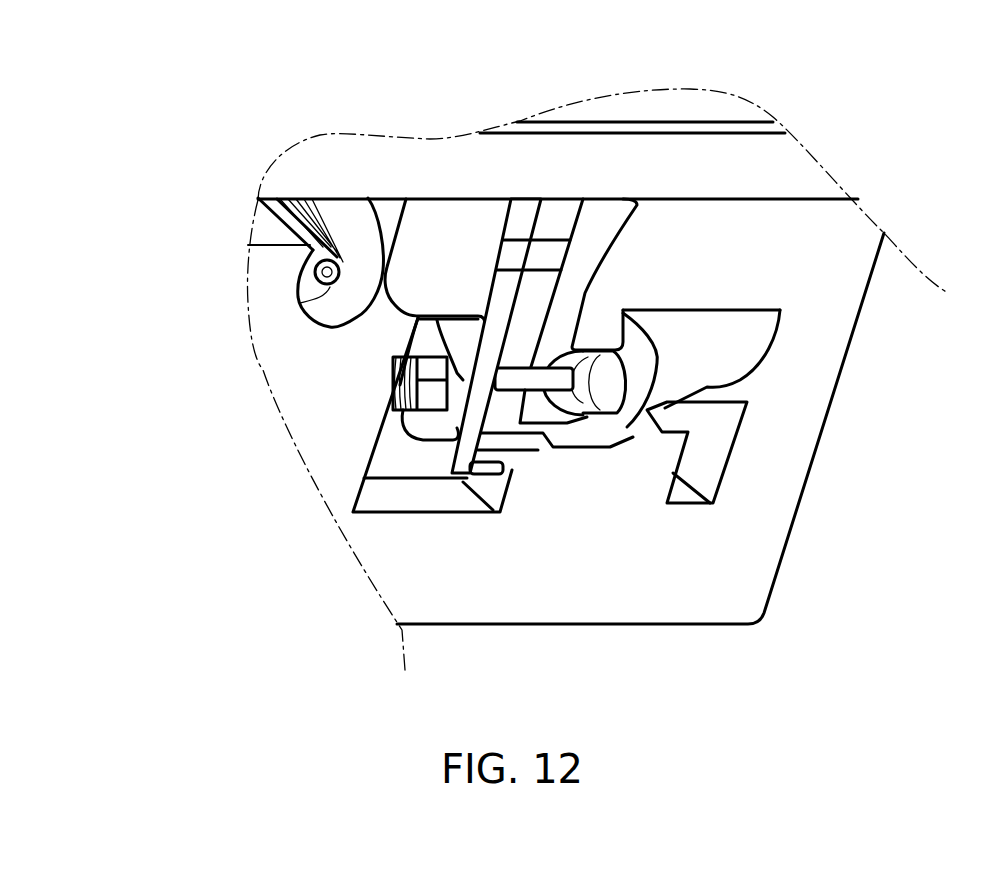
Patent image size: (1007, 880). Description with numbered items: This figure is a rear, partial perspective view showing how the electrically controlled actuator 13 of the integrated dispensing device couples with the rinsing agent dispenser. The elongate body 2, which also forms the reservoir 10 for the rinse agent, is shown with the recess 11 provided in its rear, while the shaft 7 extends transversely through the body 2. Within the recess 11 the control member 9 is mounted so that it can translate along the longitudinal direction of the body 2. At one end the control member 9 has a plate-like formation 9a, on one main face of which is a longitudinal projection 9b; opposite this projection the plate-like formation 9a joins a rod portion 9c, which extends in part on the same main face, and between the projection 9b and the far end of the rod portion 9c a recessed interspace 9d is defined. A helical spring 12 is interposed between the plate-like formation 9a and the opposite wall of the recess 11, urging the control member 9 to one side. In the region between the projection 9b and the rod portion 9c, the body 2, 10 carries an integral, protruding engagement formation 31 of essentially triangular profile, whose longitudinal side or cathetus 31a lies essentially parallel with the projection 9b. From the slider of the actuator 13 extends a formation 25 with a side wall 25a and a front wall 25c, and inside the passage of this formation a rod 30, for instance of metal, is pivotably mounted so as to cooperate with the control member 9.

The elongate body 2 is at (678, 105).
The shaft 7 is at (330, 290).
The control member 9 is at (570, 278).
The plate-like formation 9a is at (388, 442).
The longitudinal projection 9b is at (470, 333).
The rod portion 9c is at (570, 390).
The recessed interspace 9d is at (535, 452).
The reservoir 10 is at (415, 562).
The recess 11 is at (712, 338).
The helical spring 12 is at (417, 332).
The electrically controlled actuator 13 is at (780, 163).
The formation 25 is at (541, 355).
The side wall 25a is at (455, 333).
The front wall 25c is at (512, 303).
The rod 30 is at (397, 425).
The engagement formation 31 is at (378, 470).
The longitudinal side or cathetus 31a is at (485, 467).